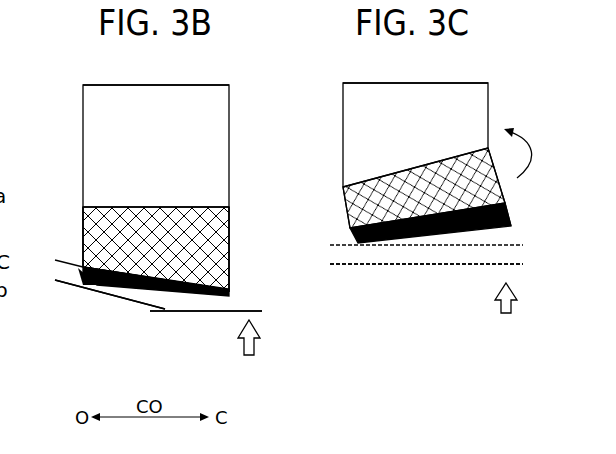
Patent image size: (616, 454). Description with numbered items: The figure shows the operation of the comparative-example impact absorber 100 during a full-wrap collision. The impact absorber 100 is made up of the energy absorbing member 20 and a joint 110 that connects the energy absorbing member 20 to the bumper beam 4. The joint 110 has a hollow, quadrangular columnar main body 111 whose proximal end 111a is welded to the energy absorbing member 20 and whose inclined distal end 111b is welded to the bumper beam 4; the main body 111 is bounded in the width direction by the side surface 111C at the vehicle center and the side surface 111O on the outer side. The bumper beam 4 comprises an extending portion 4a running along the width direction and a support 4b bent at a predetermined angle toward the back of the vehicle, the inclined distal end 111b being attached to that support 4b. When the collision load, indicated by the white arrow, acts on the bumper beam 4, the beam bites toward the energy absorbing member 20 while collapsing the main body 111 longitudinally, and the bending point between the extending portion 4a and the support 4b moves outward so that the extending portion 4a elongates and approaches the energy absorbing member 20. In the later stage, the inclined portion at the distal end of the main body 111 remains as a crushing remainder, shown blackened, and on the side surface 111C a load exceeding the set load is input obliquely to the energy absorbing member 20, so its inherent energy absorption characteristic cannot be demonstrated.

In FIG. 3B, the impact absorber 100 is at (251, 134).
In FIG. 3C, the impact absorber 100 is at (314, 134).
In FIG. 3B, the energy absorbing member 20 is at (169, 158).
In FIG. 3C, the energy absorbing member 20 is at (426, 147).
In FIG. 3B, the main body 111 is at (177, 260).
In FIG. 3C, the main body 111 is at (446, 207).
In FIG. 3B, the proximal end 111a is at (173, 207).
In FIG. 3C, the proximal end 111a is at (388, 178).
In FIG. 3B, the side surface 111O is at (83, 222).
In FIG. 3C, the side surface 111O is at (345, 217).
In FIG. 3B, the side surface 111C is at (232, 263).
In FIG. 3C, the side surface 111C is at (497, 182).
In FIG. 3B, the distal end 111b is at (229, 292).
In FIG. 3C, the distal end 111b is at (372, 246).
In FIG. 3B, the joint 110 is at (74, 287).
In FIG. 3C, the joint 110 is at (433, 255).
In FIG. 3C, the bumper beam 4 is at (372, 266).
In FIG. 3B, the extending portion 4a is at (184, 313).
In FIG. 3B, the support 4b is at (118, 306).